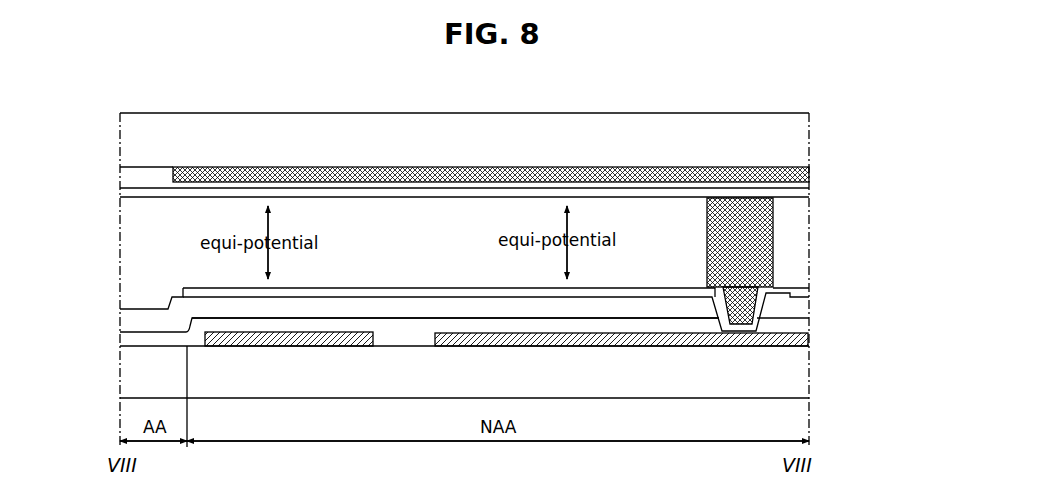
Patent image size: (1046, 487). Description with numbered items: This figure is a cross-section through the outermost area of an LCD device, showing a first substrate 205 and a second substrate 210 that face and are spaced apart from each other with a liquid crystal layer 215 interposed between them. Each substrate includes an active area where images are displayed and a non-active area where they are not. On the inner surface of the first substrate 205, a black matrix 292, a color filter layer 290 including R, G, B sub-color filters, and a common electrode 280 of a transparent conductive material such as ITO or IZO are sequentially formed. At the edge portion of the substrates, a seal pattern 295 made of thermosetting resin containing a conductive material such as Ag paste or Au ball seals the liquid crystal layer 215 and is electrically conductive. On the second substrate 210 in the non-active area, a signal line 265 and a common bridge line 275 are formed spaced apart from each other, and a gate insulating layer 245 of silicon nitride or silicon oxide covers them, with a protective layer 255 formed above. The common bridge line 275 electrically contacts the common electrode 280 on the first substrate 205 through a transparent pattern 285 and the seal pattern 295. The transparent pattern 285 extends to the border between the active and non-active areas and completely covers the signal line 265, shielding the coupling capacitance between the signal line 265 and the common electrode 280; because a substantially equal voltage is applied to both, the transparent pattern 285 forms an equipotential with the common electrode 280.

The first substrate 205 is at (795, 149).
The second substrate 210 is at (799, 384).
The liquid crystal layer 215 is at (818, 197).
The gate insulating layer 245 is at (648, 323).
The protective layer 255 is at (373, 308).
The signal line 265 is at (280, 348).
The common bridge line 275 is at (587, 348).
The common electrode 280 is at (457, 199).
The transparent pattern 285 is at (418, 293).
The color filter layer 290 is at (160, 177).
The black matrix 292 is at (468, 167).
The seal pattern 295 is at (773, 220).